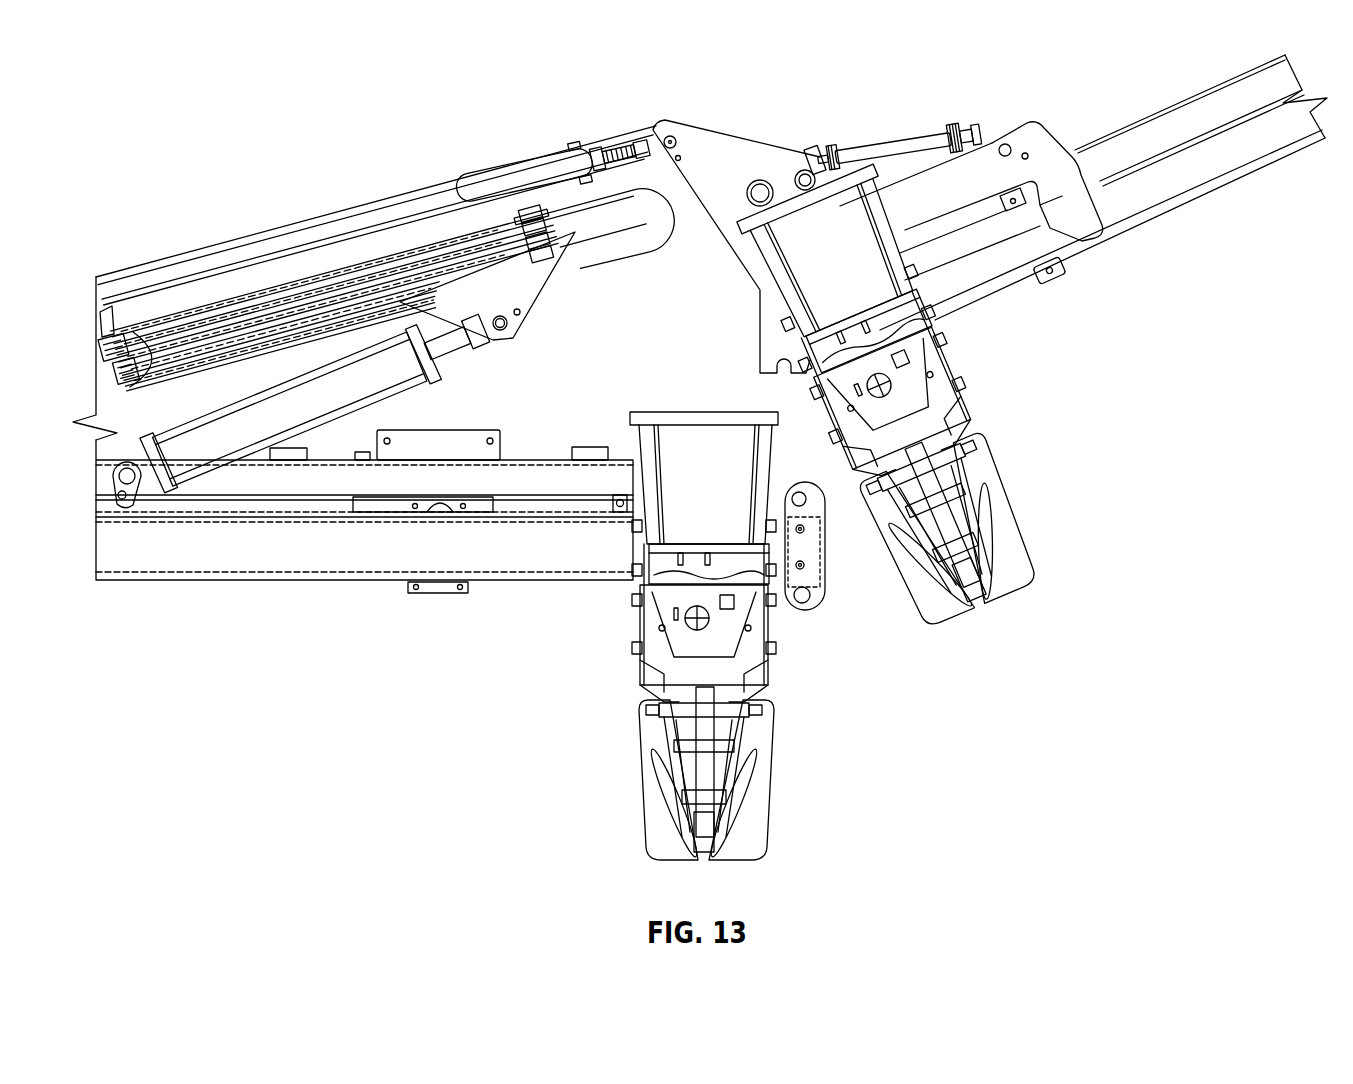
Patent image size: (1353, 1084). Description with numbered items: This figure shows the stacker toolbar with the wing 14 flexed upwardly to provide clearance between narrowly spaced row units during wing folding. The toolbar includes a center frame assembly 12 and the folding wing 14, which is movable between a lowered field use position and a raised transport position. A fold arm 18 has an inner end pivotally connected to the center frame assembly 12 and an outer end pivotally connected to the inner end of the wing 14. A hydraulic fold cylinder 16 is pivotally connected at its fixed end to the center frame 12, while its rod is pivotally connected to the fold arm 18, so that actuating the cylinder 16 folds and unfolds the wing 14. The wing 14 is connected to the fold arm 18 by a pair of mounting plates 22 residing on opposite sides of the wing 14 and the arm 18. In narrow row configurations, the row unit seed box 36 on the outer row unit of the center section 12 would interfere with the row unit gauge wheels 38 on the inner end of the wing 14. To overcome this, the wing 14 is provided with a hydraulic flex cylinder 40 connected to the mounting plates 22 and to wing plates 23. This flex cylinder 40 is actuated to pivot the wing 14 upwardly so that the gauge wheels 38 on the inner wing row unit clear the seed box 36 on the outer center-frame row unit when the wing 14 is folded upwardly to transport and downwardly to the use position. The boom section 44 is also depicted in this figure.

The center frame assembly 12 is at (282, 560).
The folding wing 14 is at (1185, 180).
The hydraulic fold cylinder 16 is at (343, 388).
The fold arm 18 is at (610, 237).
The mounting plates 22 is at (725, 150).
The wing plates 23 is at (1047, 147).
The row unit seed box 36 is at (773, 757).
The row unit gauge wheels 38 is at (1016, 497).
The hydraulic flex cylinder 40 is at (900, 140).
The boom section 44 is at (287, 228).